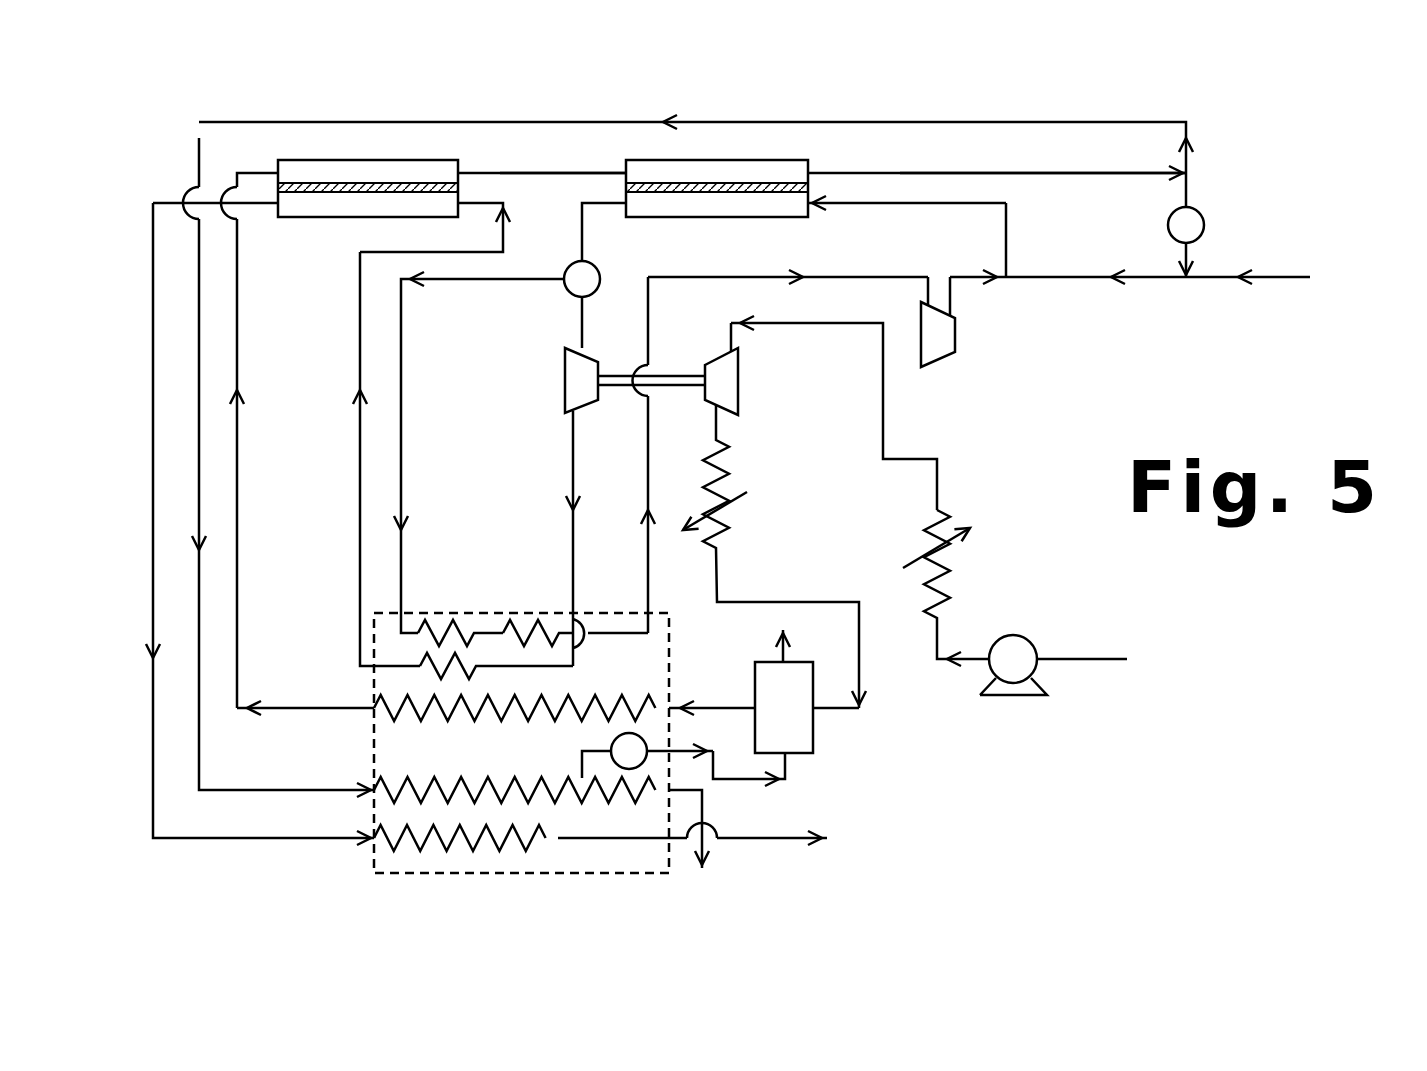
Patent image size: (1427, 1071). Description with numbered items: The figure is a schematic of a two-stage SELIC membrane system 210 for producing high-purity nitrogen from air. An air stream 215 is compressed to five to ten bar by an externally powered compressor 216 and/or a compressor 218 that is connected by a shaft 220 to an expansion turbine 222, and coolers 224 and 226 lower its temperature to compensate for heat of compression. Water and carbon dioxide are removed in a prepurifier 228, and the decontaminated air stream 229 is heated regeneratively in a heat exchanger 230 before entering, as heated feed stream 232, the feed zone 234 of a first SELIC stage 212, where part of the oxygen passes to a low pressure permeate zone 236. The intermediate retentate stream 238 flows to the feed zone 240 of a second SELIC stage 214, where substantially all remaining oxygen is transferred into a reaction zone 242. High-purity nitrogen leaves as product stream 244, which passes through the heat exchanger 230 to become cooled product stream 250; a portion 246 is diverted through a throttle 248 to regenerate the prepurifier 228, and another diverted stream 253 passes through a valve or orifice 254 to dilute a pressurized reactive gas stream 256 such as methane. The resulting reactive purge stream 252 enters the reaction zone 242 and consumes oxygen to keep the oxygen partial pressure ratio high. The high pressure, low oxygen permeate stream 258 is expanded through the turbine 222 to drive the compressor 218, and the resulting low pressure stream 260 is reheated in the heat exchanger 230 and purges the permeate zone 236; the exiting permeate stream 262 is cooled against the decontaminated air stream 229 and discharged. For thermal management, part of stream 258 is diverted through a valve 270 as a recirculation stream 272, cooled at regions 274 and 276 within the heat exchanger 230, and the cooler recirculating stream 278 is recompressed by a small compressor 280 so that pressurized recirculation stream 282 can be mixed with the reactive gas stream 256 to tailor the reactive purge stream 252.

The two-stage SELIC membrane system 210 is at (1017, 103).
The first SELIC stage 212 is at (405, 152).
The second SELIC stage 214 is at (790, 142).
The air stream 215 is at (1100, 661).
The externally powered compressor 216 is at (1020, 636).
The compressor 218 is at (740, 360).
The shaft 220 is at (668, 375).
The expansion turbine 222 is at (555, 373).
The cooler 224 is at (945, 565).
The cooler 226 is at (725, 530).
The prepurifier 228 is at (803, 755).
The decontaminated air stream 229 is at (722, 708).
The heat exchanger 230 is at (415, 873).
The heated feed stream 232 is at (257, 172).
The feed zone 234 is at (365, 160).
The permeate zone 236 is at (323, 217).
The intermediate retentate stream 238 is at (528, 173).
The feed zone 240 is at (680, 160).
The reaction zone 242 is at (748, 217).
The product stream 244 is at (1000, 172).
The portion of product stream 246 is at (737, 781).
The throttle 248 is at (613, 733).
The cooled product stream 250 is at (710, 845).
The reactive purge stream 252 is at (1006, 245).
The diverted product stream 253 is at (1190, 252).
The valve or orifice 254 is at (1227, 220).
The pressurized reactive gas stream 256 is at (1275, 281).
The permeate stream 258 is at (582, 238).
The low pressure stream 260 is at (580, 548).
The exiting permeate stream 262 is at (152, 410).
The valve 270 is at (562, 290).
The recirculation stream 272 is at (447, 282).
The region 274 is at (432, 625).
The region 276 is at (503, 625).
The cooler recirculating stream 278 is at (673, 463).
The small compressor 280 is at (955, 340).
The pressurized recirculation stream 282 is at (966, 276).